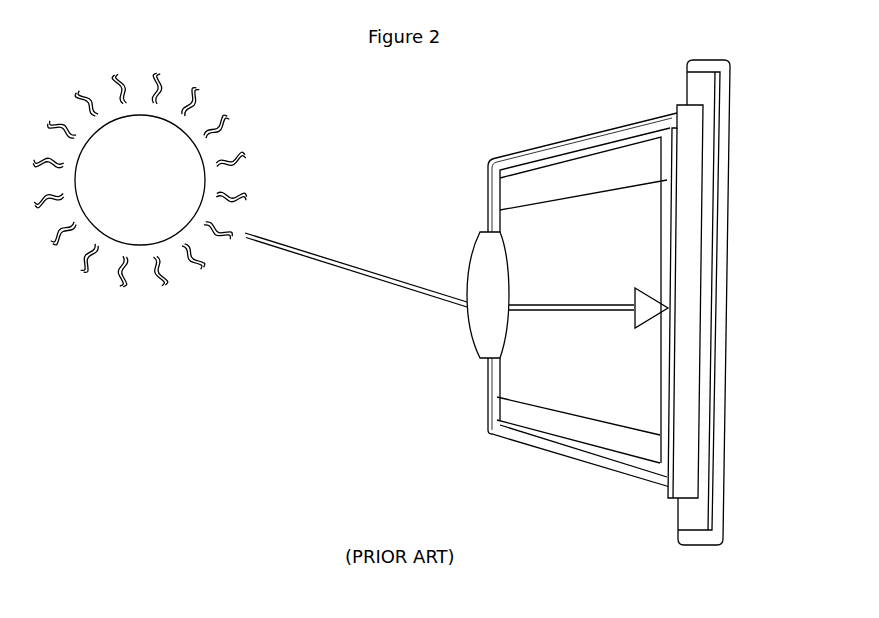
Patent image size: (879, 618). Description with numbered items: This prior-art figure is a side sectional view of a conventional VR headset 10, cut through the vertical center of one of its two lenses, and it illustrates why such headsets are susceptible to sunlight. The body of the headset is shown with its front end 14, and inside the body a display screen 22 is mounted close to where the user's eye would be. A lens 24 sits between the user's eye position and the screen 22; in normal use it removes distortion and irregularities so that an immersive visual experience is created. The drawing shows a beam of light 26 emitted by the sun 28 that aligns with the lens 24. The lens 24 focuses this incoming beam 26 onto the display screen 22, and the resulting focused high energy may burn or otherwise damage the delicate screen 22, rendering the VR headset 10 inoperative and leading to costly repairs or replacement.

The VR headset 10 is at (590, 98).
The front end 14 is at (718, 460).
The display screen 22 is at (680, 432).
The lens 24 is at (483, 251).
The beam of light 26 is at (377, 279).
The sun 28 is at (139, 179).